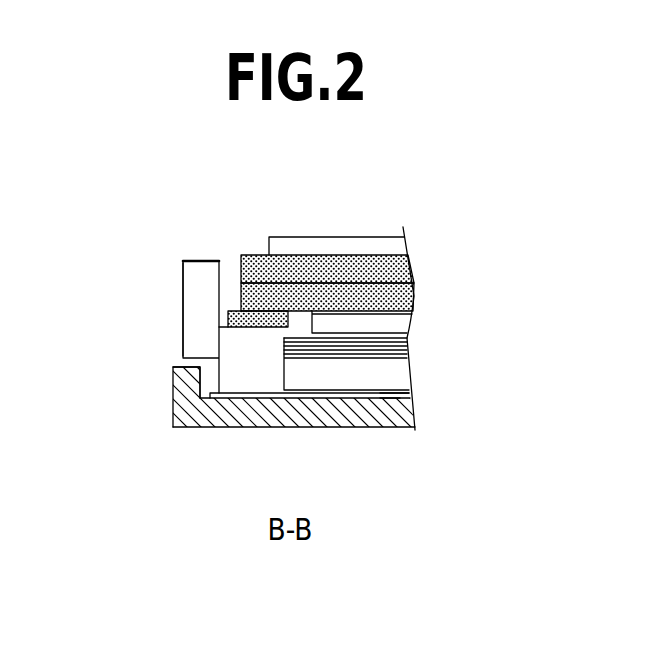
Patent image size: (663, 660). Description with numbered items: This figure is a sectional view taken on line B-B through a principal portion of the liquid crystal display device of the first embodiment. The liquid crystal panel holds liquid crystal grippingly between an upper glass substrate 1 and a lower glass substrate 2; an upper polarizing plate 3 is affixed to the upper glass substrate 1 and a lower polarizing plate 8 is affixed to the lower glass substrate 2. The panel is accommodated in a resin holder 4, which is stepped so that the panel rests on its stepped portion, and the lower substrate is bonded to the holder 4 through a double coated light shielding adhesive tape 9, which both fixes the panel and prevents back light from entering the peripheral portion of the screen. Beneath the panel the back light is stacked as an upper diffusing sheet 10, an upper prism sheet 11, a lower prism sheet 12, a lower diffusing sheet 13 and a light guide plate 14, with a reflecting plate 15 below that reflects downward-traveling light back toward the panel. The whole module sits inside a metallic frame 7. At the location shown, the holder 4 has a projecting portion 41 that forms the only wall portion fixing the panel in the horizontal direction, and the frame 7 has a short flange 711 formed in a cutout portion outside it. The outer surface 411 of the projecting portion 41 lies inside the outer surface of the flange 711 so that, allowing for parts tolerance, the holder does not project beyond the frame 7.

The upper glass substrate 1 is at (368, 258).
The lower glass substrate 2 is at (414, 292).
The upper polarizing plate 3 is at (318, 247).
The holder 4 is at (250, 383).
The metallic frame 7 is at (320, 422).
The lower polarizing plate 8 is at (410, 324).
The double coated light shielding adhesive tape 9 is at (228, 318).
The upper diffusing sheet 10 is at (406, 337).
The upper prism sheet 11 is at (406, 342).
The lower prism sheet 12 is at (405, 352).
The lower diffusing sheet 13 is at (397, 380).
The light guide plate 14 is at (407, 392).
The reflecting plate 15 is at (391, 395).
The projecting portion 41 is at (190, 277).
The outer surface of projecting portion 411 is at (183, 302).
The short flange 711 is at (173, 410).